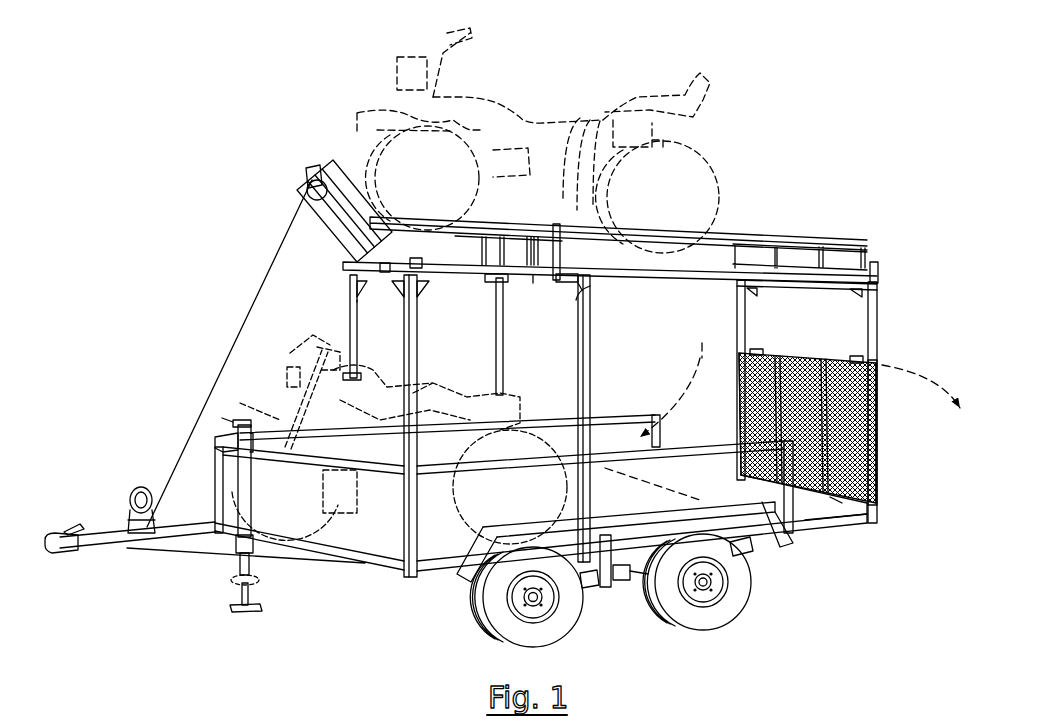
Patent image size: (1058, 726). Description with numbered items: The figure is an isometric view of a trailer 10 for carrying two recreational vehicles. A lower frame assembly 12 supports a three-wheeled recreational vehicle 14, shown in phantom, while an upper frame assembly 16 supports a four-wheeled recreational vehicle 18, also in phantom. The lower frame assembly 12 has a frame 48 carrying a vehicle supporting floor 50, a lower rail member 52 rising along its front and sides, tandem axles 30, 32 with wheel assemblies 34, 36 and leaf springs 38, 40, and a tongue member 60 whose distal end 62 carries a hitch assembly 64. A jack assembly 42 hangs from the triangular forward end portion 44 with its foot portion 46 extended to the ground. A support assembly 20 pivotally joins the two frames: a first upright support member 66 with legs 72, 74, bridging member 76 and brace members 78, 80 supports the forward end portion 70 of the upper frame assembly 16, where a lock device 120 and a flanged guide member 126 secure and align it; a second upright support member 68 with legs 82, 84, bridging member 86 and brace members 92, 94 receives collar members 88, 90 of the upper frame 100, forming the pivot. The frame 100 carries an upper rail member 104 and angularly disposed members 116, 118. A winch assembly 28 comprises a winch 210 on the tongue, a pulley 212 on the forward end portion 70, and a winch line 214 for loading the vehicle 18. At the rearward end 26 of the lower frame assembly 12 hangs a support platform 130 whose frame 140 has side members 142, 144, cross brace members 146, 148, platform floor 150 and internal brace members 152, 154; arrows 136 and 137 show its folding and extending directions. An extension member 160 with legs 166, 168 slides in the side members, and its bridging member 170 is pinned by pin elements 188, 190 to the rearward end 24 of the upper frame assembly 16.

The trailer 10 is at (770, 100).
The lower frame assembly 12 is at (518, 480).
The recreational vehicle 14 is at (430, 410).
The upper frame assembly 16 is at (564, 245).
The recreational vehicle 18 is at (548, 110).
The support assembly 20 is at (482, 425).
The rearward end of the upper frame assembly 24 is at (858, 270).
The rearward end of the lower frame assembly 26 is at (847, 512).
The winch assembly 28 is at (212, 377).
The axle 30 is at (537, 596).
The axle 32 is at (710, 573).
The wheel assembly 34 is at (527, 597).
The wheel assembly 36 is at (696, 590).
The leaf spring 38 is at (473, 590).
The leaf spring 40 is at (750, 553).
The jack assembly 42 is at (243, 521).
The forward end portion of the lower frame assembly 44 is at (263, 540).
The foot portion 46 is at (230, 582).
The frame 48 is at (813, 523).
The vehicle supporting floor 50 is at (742, 493).
The lower rail member 52 is at (610, 413).
The tongue member 60 is at (130, 534).
The distal end 62 is at (92, 533).
The hitch assembly 64 is at (55, 533).
The first upright support member 66 is at (390, 426).
The second upright support member 68 is at (567, 418).
The forward end portion of the upper frame assembly 70 is at (386, 277).
The first upwardly extending leg 72 is at (417, 367).
The second upwardly extending leg 74 is at (352, 378).
The bridging member 76 is at (360, 282).
The brace member 78 is at (379, 319).
The brace member 80 is at (358, 312).
The first upwardly extending leg 82 is at (590, 370).
The second upwardly extending leg 84 is at (502, 367).
The bridging member 86 is at (533, 281).
The collar member 88 is at (580, 291).
The collar member 90 is at (556, 288).
The brace member 92 is at (575, 300).
The brace member 94 is at (497, 281).
The frame 100 is at (683, 275).
The upper rail member 104 is at (312, 234).
The first angularly disposed member 116 is at (372, 241).
The second angularly disposed member 118 is at (323, 214).
The lock device 120 is at (383, 267).
The guide member 126 is at (415, 262).
The support platform 130 is at (800, 454).
The arrow 136 is at (682, 381).
The arrow 137 is at (913, 362).
The frame 140 is at (809, 454).
The first side member 142 is at (877, 427).
The second side member 144 is at (735, 388).
The upper cross brace member 146 is at (818, 353).
The lower cross brace member 148 is at (838, 500).
The platform floor 150 is at (880, 450).
The internal brace member 152 is at (874, 395).
The internal brace member 154 is at (773, 378).
The extension member 160 is at (836, 400).
The first leg 166 is at (878, 343).
The second leg 168 is at (745, 315).
The bridging member 170 is at (808, 278).
The pin element 188 is at (860, 282).
The pin element 190 is at (754, 280).
The winch 210 is at (128, 533).
The pulley 212 is at (316, 176).
The winch line 214 is at (243, 325).